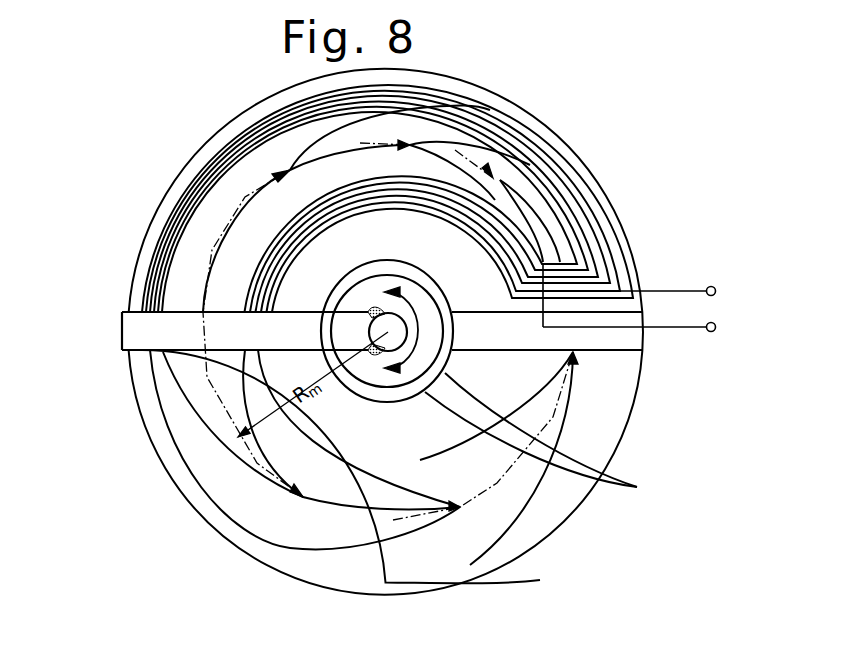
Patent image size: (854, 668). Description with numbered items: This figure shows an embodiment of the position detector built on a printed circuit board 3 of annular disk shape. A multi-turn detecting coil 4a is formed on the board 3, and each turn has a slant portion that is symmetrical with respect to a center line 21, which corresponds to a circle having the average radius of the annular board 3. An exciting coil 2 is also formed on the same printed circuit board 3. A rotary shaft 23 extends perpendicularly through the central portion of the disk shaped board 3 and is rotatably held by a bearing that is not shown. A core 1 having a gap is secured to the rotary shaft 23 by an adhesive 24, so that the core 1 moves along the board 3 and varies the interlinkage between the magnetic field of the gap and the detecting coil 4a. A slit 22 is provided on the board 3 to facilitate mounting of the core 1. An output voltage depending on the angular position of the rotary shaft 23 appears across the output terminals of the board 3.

The core 1 is at (120, 330).
The exciting coil 2 is at (407, 335).
The printed circuit board 3 is at (640, 427).
The detecting coil 4a is at (594, 197).
The center line 21 is at (540, 580).
The slit 22 is at (647, 337).
The rotary shaft 23 is at (378, 352).
The adhesive 24 is at (370, 316).